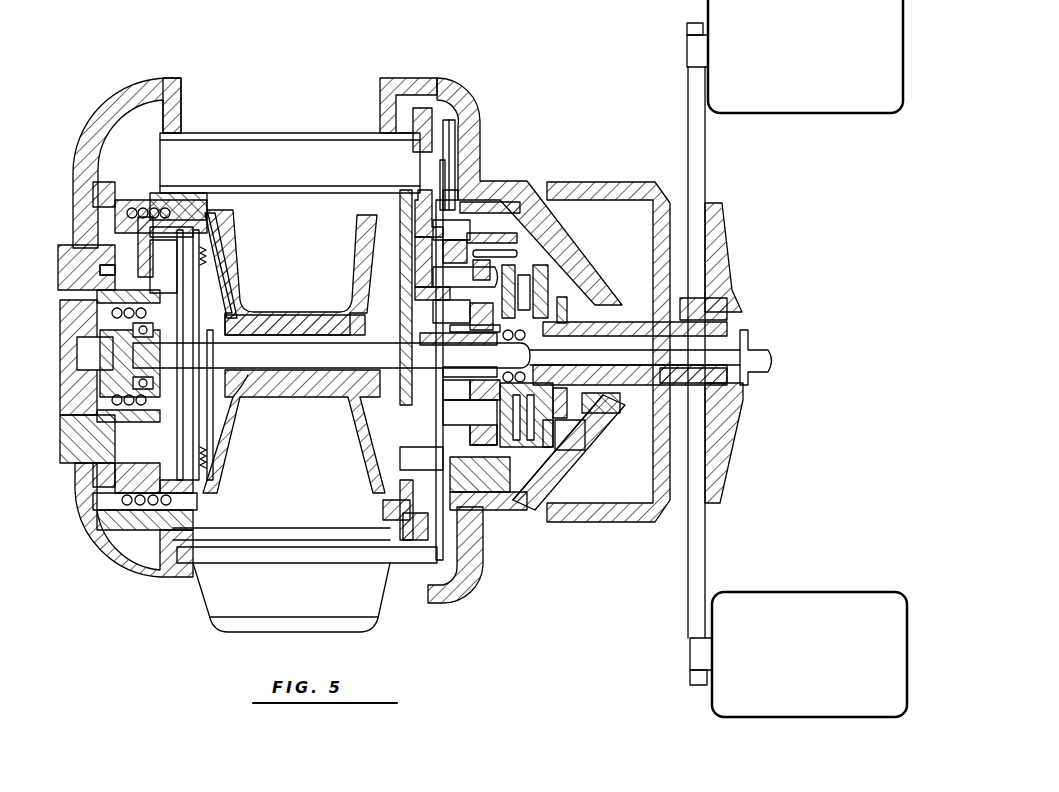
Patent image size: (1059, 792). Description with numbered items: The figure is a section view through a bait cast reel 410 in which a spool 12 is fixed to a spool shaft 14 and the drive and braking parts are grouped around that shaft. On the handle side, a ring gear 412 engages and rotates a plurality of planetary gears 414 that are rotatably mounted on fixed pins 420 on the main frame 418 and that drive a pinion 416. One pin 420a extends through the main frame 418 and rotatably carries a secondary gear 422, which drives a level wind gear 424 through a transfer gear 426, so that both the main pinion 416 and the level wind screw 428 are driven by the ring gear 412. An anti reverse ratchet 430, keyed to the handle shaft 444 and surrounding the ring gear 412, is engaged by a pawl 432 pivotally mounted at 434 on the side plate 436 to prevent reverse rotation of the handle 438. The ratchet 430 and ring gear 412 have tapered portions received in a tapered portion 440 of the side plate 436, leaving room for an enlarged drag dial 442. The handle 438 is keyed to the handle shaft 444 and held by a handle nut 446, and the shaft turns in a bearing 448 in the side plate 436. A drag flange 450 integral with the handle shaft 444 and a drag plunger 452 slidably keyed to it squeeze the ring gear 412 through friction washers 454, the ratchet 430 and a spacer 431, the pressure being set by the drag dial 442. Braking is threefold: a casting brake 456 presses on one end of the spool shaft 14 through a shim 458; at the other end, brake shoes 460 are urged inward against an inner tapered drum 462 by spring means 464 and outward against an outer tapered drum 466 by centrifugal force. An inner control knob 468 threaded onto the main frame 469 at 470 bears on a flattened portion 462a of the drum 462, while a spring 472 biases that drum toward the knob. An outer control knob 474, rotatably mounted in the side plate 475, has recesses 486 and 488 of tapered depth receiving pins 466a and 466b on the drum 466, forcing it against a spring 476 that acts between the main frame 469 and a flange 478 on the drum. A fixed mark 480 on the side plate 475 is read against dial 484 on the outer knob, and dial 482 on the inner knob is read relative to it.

The spool 12 is at (236, 392).
The spool shaft 14 is at (278, 355).
The bait cast reel 410 is at (505, 556).
The ring gear 412 is at (505, 490).
The planetary gears 414 is at (575, 455).
The pinion 416 is at (400, 356).
The main frame 418 is at (436, 440).
The fixed pins 420 is at (455, 405).
The pin 420a is at (440, 298).
The secondary gear 422 is at (448, 312).
The level wind gear 424 is at (423, 120).
The transfer gear 426 is at (470, 205).
The level wind screw 428 is at (222, 158).
The anti reverse ratchet 430 is at (448, 178).
The spacer 431 is at (570, 425).
The pawl 432 is at (455, 150).
The pivot mounting 434 is at (470, 118).
The side plate 436 is at (407, 87).
The handle 438 is at (697, 153).
The tapered portion 440 is at (560, 268).
The drag dial 442 is at (605, 185).
The handle shaft 444 is at (630, 405).
The handle nut 446 is at (740, 398).
The bearing 448 is at (585, 320).
The drag flange 450 is at (528, 300).
The drag plunger 452 is at (712, 318).
The friction washers 454 is at (565, 300).
The casting brake 456 is at (758, 360).
The shim 458 is at (712, 310).
The brake shoes 460 is at (170, 266).
The inner tapered drum 462 is at (190, 290).
The flattened portion 462a is at (97, 297).
The spring means 464 is at (206, 458).
The outer tapered drum 466 is at (205, 220).
The pin 466a is at (112, 168).
The pin 466b is at (80, 468).
The inner control knob 468 is at (70, 378).
The main frame 469 is at (172, 80).
The threaded connection 470 is at (77, 352).
The spring 472 is at (97, 404).
The outer control knob 474 is at (62, 460).
The side plate 475 is at (88, 122).
The spring 476 is at (97, 522).
The flange 478 is at (100, 499).
The fixed mark 480 is at (93, 243).
The dial 482 is at (60, 318).
The dial 484 is at (58, 262).
The recess 486 is at (84, 230).
The recess 488 is at (100, 270).